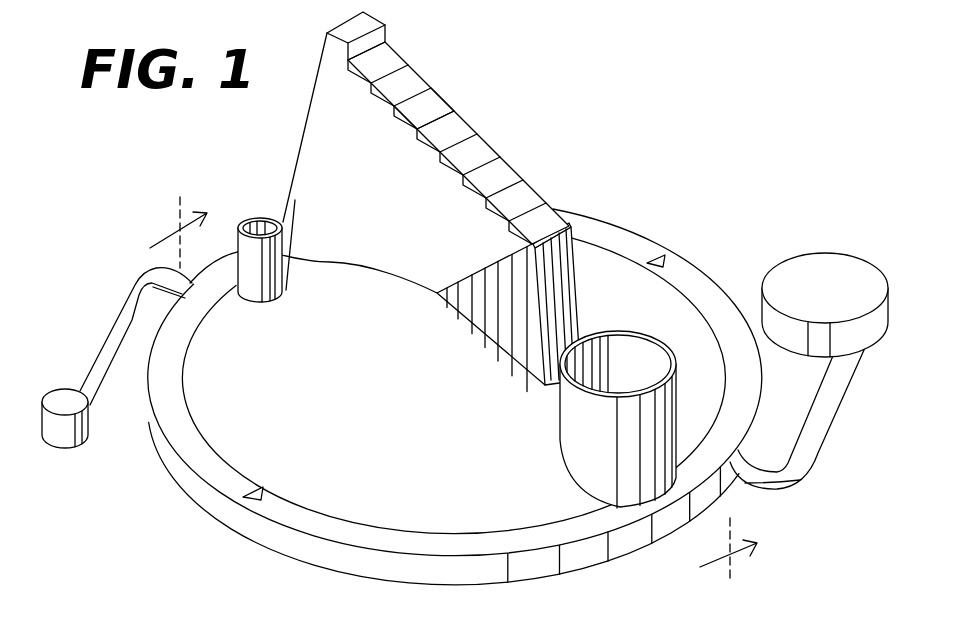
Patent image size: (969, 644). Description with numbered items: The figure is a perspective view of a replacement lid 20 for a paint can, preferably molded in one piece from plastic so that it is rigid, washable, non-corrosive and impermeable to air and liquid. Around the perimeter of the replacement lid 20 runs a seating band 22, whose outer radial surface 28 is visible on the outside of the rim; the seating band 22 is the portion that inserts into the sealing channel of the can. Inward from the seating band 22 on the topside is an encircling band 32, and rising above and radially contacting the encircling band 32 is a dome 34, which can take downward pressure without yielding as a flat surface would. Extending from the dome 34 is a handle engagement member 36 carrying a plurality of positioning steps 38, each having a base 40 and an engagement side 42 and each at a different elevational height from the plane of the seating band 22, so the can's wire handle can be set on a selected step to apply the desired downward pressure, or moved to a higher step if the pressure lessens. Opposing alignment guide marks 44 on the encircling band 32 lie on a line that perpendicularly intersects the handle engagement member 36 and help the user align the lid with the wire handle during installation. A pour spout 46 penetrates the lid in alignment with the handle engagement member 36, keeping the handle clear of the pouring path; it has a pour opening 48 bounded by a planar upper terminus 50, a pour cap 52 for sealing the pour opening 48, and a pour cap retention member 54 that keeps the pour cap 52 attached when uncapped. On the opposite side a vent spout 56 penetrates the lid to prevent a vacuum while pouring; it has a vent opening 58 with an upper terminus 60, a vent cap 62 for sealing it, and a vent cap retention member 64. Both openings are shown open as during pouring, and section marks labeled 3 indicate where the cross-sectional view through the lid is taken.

The replacement lid 20 is at (664, 135).
The seating band 22 is at (185, 493).
The outer radial surface 28 is at (295, 545).
The encircling band 32 is at (428, 540).
The dome 34 is at (440, 470).
The handle engagement member 36 is at (430, 310).
The positioning steps 38 is at (463, 176).
The base 40 is at (425, 103).
The engagement side 42 is at (417, 137).
The alignment guide marks 44 is at (265, 493).
The pour spout 46 is at (560, 425).
The pour opening 48 is at (644, 362).
The upper terminus 50 is at (540, 375).
The pour cap 52 is at (845, 252).
The pour cap retention member 54 is at (818, 435).
The vent spout 56 is at (283, 292).
The vent opening 58 is at (266, 228).
The upper terminus 60 is at (278, 228).
The vent cap 62 is at (70, 447).
The vent cap retention member 64 is at (112, 318).
The section line 3- 3 is at (463, 387).